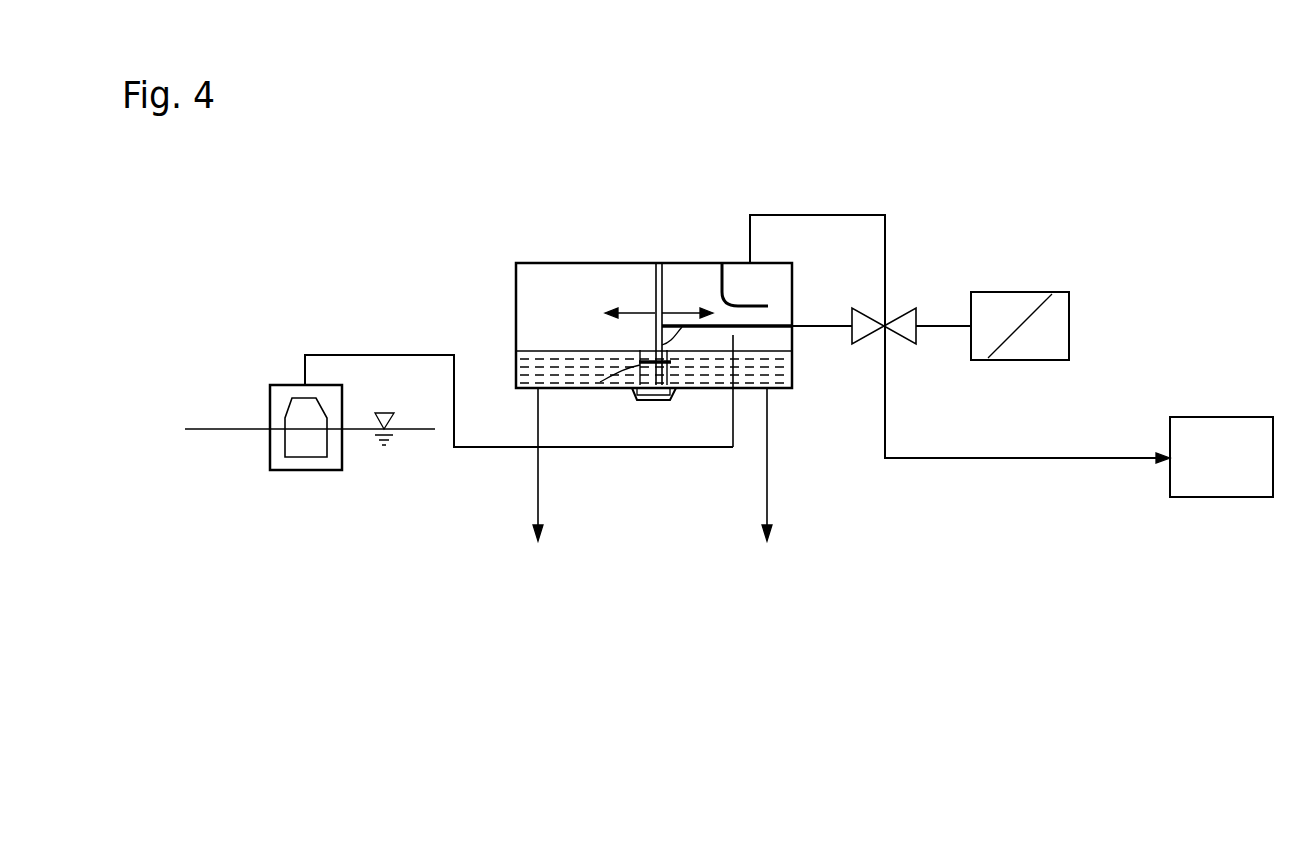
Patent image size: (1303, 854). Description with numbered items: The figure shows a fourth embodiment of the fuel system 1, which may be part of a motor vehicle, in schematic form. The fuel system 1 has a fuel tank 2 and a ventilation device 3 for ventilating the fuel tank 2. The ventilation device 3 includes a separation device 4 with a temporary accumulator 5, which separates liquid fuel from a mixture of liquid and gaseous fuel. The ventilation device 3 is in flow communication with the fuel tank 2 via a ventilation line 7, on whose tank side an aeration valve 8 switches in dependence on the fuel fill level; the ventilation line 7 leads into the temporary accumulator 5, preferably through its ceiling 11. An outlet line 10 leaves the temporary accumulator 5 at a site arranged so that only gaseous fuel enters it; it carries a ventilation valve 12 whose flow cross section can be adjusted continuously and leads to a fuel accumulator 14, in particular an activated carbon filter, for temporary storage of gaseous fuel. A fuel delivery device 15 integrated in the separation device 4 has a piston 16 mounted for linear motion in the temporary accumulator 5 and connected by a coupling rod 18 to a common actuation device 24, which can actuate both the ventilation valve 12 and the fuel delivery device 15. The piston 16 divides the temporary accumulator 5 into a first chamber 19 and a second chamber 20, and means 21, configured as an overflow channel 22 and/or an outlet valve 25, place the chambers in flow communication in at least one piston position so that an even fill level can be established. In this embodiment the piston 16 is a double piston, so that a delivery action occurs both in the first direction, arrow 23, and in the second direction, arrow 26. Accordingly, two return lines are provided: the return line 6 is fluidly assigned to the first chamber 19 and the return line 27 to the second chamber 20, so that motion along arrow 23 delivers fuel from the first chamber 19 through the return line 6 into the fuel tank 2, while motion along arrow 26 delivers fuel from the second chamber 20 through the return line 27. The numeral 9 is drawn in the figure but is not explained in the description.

The fuel system 1 is at (232, 273).
The fuel tank 2 is at (389, 533).
The ventilation device 3 is at (1013, 238).
The separation device 4 is at (567, 232).
The temporary accumulator 5 is at (688, 282).
The return line 6 is at (533, 404).
The ventilation line 7 is at (708, 447).
The aeration valve 8 is at (284, 461).
The tank bottom 9 is at (697, 389).
The outlet line 10 is at (831, 214).
The ceiling 11 is at (632, 262).
The ventilation valve 12 is at (905, 320).
The fuel accumulator 14 is at (1221, 427).
The fuel delivery device 15 is at (810, 408).
The piston 16 is at (661, 262).
The coupling rod 18 is at (820, 322).
The first chamber 19 is at (601, 275).
The second chamber 20 is at (710, 280).
The means 21 is at (618, 455).
The overflow channel 22 is at (652, 398).
The arrow 23 is at (642, 310).
The common actuation device 24 is at (1053, 341).
The outlet valve 25 is at (600, 382).
The arrow 26 is at (655, 345).
The return line 27 is at (768, 403).